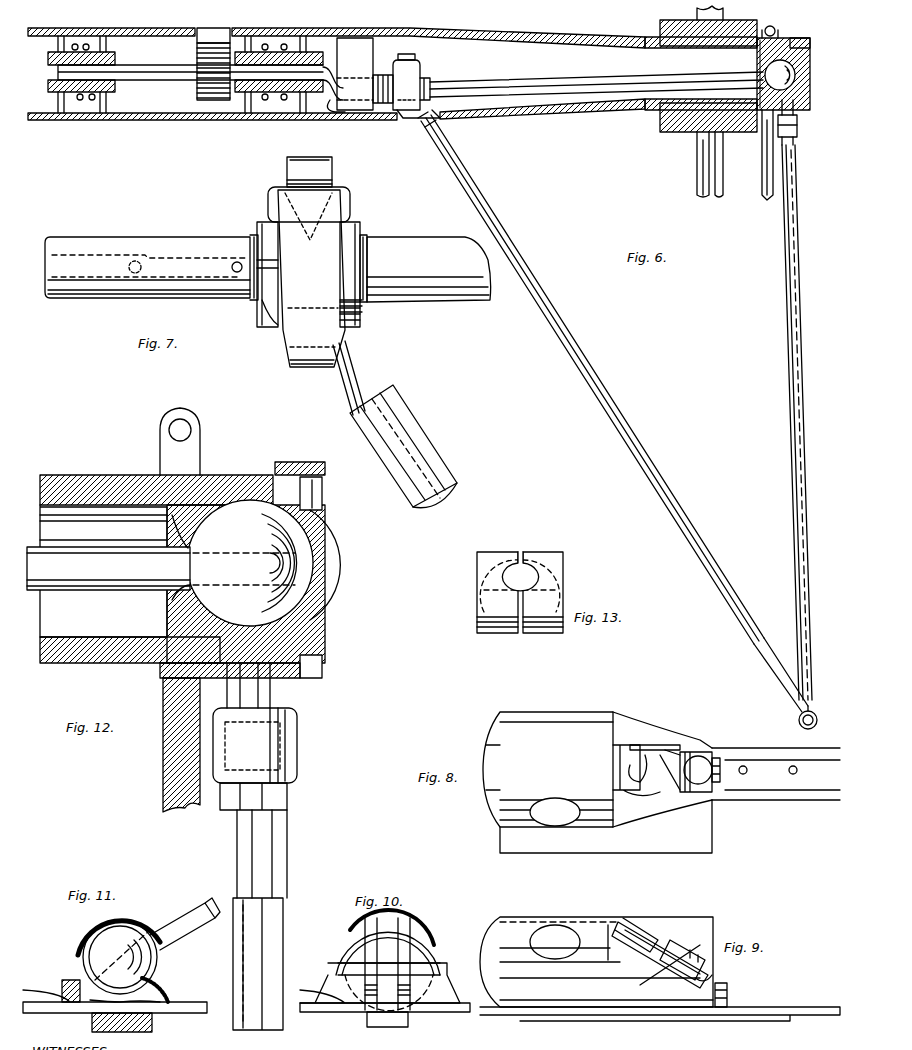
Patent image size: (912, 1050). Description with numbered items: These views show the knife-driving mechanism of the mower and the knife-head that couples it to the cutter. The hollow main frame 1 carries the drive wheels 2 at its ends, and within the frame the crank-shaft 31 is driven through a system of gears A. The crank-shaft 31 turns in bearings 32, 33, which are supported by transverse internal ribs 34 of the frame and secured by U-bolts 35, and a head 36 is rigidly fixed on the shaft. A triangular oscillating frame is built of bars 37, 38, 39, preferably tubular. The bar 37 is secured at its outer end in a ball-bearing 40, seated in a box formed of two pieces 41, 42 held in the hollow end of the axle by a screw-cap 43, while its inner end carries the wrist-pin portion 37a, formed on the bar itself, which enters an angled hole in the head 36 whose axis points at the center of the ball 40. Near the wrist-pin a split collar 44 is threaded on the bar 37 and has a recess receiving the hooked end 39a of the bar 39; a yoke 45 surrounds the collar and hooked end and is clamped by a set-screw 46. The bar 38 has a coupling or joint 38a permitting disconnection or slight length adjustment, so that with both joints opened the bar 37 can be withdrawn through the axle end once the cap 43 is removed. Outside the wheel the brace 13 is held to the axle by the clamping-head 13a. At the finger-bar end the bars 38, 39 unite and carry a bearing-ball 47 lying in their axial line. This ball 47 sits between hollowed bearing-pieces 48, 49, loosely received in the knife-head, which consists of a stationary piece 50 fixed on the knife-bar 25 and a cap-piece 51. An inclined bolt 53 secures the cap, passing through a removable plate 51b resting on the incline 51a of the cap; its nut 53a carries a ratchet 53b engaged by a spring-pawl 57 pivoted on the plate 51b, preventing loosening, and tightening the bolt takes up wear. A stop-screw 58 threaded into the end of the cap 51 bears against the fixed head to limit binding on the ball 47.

In FIG. 6, the main frame 1 is at (165, 36).
In FIG. 12, the main frame 1 is at (92, 488).
In FIG. 6, the carrying and drive wheels 2 is at (690, 132).
In FIG. 6, the system of gears A is at (213, 58).
In FIG. 6, the brace 13 is at (765, 172).
In FIG. 6, the clamping-head 13a is at (770, 30).
In FIG. 12, the clamping-head 13a is at (172, 460).
In FIG. 11, the knife-bar 25 is at (152, 1022).
In FIG. 8, the knife-bar 25 is at (806, 790).
In FIG. 6, the crank-shaft 31 is at (153, 78).
In FIG. 6, the bearing 32 is at (278, 93).
In FIG. 6, the bearing 33 is at (112, 52).
In FIG. 6, the transverse internal ribs 34 is at (61, 113).
In FIG. 6, the U-bolts 35 is at (80, 100).
In FIG. 6, the head 36 is at (365, 74).
In FIG. 6, the bar 37 is at (540, 86).
In FIG. 7, the bar 37 is at (410, 246).
In FIG. 12, the bar 37 is at (85, 586).
In FIG. 6, the wrist-pin portion 37a is at (345, 112).
In FIG. 7, the wrist-pin portion 37a is at (122, 250).
In FIG. 6, the bar 38 is at (800, 314).
In FIG. 12, the bar 38 is at (264, 924).
In FIG. 6, the coupling or joint 38a is at (798, 125).
In FIG. 12, the coupling or joint 38a is at (297, 728).
In FIG. 6, the bar 39 is at (583, 360).
In FIG. 7, the bar 39 is at (412, 440).
In FIG. 7, the hooked end 39a is at (360, 364).
In FIG. 6, the ball-bearing 40 is at (796, 75).
In FIG. 12, the ball-bearing 40 is at (248, 563).
In FIG. 6, the box piece 41 is at (772, 34).
In FIG. 12, the box piece 41 is at (172, 612).
In FIG. 6, the box piece 42 is at (808, 60).
In FIG. 12, the box piece 42 is at (318, 548).
In FIG. 6, the screw-cap 43 is at (800, 42).
In FIG. 12, the screw-cap 43 is at (290, 470).
In FIG. 7, the split collar 44 is at (362, 312).
In FIG. 6, the yoke 45 is at (410, 84).
In FIG. 7, the yoke 45 is at (308, 277).
In FIG. 7, the set-screw 46 is at (322, 172).
In FIG. 6, the bearing-ball 47 is at (799, 718).
In FIG. 13, the bearing-piece 48 is at (477, 620).
In FIG. 13, the bearing-piece 49 is at (563, 628).
In FIG. 11, the stationary piece 50 is at (170, 985).
In FIG. 10, the stationary piece 50 is at (352, 945).
In FIG. 9, the stationary piece 50 is at (660, 999).
In FIG. 11, the cap-piece 51 is at (83, 930).
In FIG. 10, the cap-piece 51 is at (428, 930).
In FIG. 9, the cap-piece 51 is at (520, 920).
In FIG. 8, the cap-piece 51 is at (597, 782).
In FIG. 9, the incline 51a is at (640, 945).
In FIG. 8, the removable plate 51b is at (645, 800).
In FIG. 9, the bolt 53 is at (700, 940).
In FIG. 8, the bolt 53 is at (700, 758).
In FIG. 9, the nut 53a is at (712, 962).
In FIG. 9, the ratchet 53b is at (663, 975).
In FIG. 8, the ratchet 53b is at (690, 795).
In FIG. 9, the spring-pawl 57 is at (650, 930).
In FIG. 8, the spring-pawl 57 is at (637, 745).
In FIG. 9, the stop-screw 58 is at (728, 985).
In FIG. 8, the stop-screw 58 is at (722, 782).